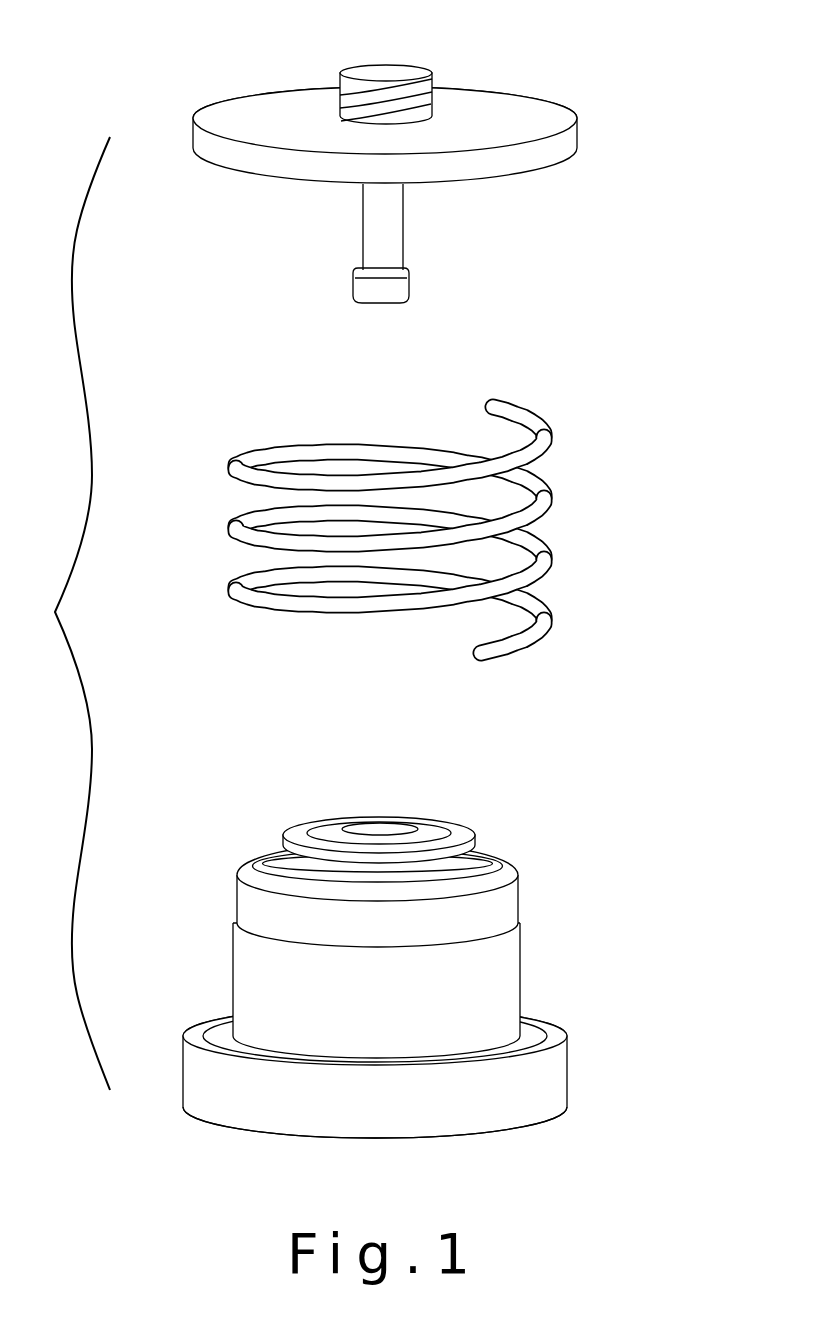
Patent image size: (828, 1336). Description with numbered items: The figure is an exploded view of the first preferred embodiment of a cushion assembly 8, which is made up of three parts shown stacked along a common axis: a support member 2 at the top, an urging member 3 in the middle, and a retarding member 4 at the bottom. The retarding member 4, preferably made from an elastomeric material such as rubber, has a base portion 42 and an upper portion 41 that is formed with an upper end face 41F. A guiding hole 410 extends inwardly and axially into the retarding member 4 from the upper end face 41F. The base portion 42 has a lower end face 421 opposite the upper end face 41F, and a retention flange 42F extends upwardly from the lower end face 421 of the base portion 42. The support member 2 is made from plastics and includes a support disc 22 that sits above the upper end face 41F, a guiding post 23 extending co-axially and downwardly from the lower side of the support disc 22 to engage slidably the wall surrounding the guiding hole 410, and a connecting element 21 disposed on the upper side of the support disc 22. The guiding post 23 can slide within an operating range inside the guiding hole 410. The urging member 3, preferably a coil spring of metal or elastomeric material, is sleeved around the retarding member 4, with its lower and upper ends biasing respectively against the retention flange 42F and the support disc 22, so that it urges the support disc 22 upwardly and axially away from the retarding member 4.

The support member 2 is at (452, 157).
The connecting element 21 is at (386, 72).
The support disc 22 is at (508, 100).
The guiding post 23 is at (390, 238).
The urging member 3 is at (592, 537).
The retarding member 4 is at (410, 958).
The upper portion 41 is at (427, 798).
The upper end face 41F is at (362, 826).
The guiding hole 410 is at (392, 830).
The base portion 42 is at (410, 1082).
The retention flange 42F is at (553, 1034).
The lower end face 421 is at (240, 1125).
The cushion assembly 8 is at (65, 613).